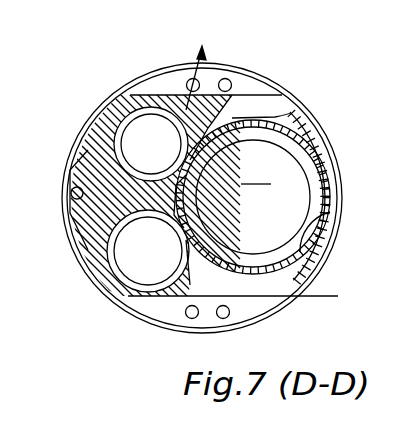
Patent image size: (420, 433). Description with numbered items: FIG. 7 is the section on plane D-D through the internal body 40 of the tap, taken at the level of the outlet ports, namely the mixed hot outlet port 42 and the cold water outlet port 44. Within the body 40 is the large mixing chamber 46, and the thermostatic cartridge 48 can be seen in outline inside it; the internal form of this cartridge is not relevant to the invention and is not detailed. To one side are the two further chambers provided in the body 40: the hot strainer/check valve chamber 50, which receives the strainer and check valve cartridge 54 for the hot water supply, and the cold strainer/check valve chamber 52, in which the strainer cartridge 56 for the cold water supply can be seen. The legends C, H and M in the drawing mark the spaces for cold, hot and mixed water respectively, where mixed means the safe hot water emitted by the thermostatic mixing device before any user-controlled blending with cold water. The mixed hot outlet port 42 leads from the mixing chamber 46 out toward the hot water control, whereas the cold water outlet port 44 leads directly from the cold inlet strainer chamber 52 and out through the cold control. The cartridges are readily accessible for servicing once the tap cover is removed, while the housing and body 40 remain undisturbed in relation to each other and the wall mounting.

The body 40 is at (336, 296).
The mixed hot outlet port 42 is at (179, 298).
The cold water outlet port 44 is at (180, 110).
The mixing chamber 46 is at (253, 197).
The thermostatic cartridge 48 is at (322, 240).
The hot strainer/check valve chamber 50 is at (133, 263).
The cold strainer/check valve chamber 52 is at (133, 130).
The strainer and check valve cartridge 54 is at (118, 265).
The strainer cartridge 56 is at (122, 152).